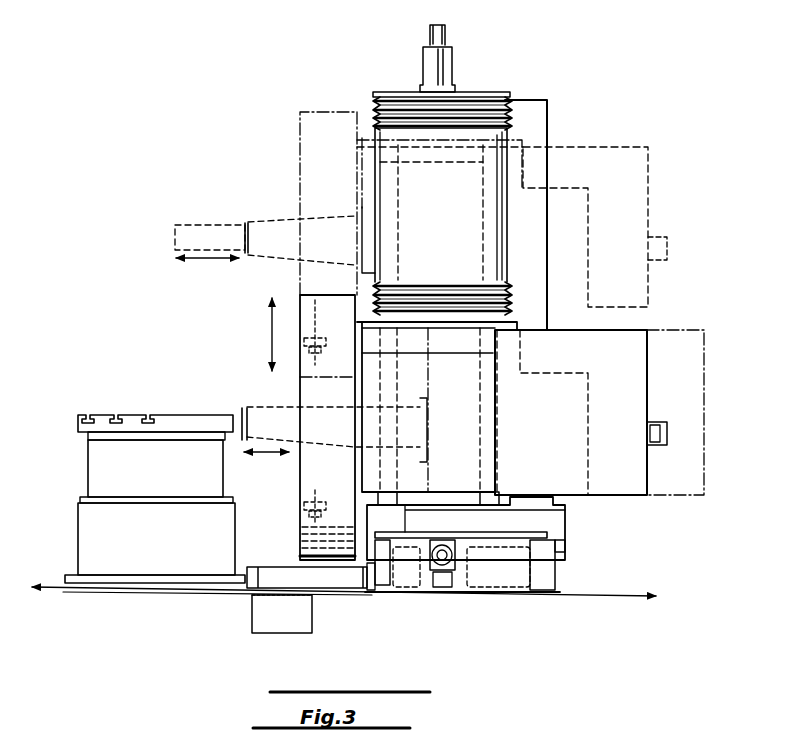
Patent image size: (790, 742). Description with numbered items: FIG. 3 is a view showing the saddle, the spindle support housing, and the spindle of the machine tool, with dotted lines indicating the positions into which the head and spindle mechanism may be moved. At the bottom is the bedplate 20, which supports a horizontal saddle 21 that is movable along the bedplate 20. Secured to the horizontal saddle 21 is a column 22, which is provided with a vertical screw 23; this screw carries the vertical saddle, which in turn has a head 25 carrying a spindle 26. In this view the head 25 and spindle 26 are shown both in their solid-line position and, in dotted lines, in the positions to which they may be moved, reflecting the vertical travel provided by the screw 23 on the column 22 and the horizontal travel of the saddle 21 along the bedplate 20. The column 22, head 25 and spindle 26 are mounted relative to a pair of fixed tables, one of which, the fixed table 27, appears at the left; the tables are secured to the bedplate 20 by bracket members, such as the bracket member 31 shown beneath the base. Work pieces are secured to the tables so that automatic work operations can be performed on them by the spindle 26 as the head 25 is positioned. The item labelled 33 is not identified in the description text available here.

The bedplate 20 is at (548, 575).
The horizontal saddle 21 is at (566, 530).
The column 22 is at (549, 172).
The vertical screw 23 is at (507, 108).
The head 25 is at (648, 398).
The spindle 26 is at (268, 224).
The fixed table 27 is at (100, 471).
The bracket member 31 is at (324, 582).
The column 33 is at (300, 125).